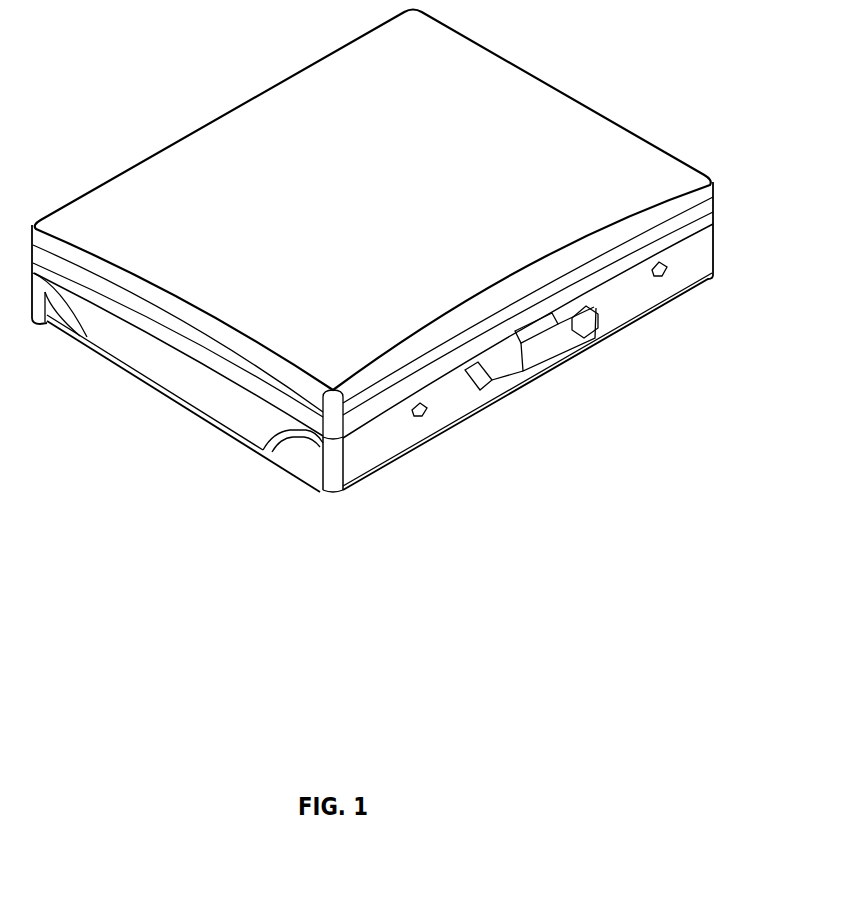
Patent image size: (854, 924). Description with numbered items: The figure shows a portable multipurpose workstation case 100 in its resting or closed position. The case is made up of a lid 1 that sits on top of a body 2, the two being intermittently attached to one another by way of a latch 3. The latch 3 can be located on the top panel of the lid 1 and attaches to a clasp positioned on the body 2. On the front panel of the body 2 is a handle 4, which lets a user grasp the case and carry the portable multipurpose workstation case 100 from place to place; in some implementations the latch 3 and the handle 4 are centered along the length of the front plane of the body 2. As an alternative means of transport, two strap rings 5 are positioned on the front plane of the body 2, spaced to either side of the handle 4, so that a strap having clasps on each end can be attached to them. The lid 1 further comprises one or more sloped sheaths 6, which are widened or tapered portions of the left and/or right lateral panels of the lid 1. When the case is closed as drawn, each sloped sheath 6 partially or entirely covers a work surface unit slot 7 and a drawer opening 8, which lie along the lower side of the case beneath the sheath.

The portable multipurpose workstation case 100 is at (143, 93).
The lid 1 is at (470, 53).
The body 2 is at (710, 250).
The latch 3 is at (535, 323).
The handle 4 is at (526, 372).
The strap rings 5 is at (652, 270).
The sloped sheath 6 is at (176, 358).
The work surface unit slot 7 is at (321, 440).
The drawer opening 8 is at (290, 452).